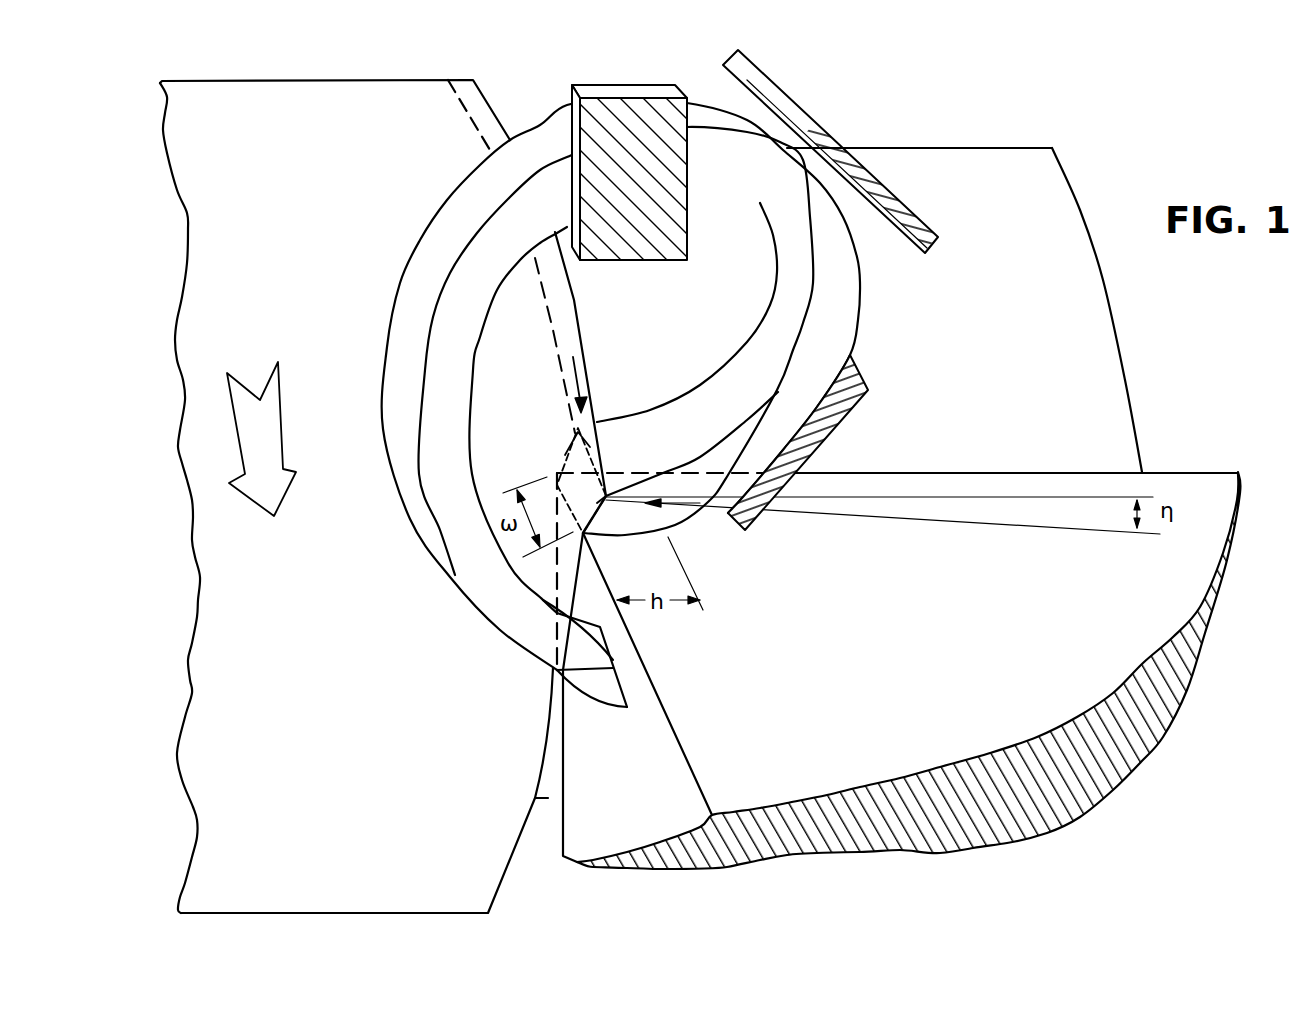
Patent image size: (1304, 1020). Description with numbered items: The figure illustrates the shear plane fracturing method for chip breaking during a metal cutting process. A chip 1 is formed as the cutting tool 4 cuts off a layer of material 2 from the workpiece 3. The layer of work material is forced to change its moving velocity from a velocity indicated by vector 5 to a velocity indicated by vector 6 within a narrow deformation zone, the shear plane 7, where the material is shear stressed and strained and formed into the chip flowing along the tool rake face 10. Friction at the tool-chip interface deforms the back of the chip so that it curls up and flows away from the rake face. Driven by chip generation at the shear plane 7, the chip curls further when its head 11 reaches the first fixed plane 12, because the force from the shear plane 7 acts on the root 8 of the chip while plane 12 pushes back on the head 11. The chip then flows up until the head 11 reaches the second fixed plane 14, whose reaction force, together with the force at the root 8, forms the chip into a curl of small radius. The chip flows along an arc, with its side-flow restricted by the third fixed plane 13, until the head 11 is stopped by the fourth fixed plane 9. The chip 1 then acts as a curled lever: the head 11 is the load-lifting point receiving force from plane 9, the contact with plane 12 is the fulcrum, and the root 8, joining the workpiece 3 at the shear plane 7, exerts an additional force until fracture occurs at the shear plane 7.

The chip 1 is at (743, 380).
The layer of material 2 is at (563, 327).
The workpiece 3 is at (368, 105).
The cutting tool 4 is at (992, 822).
The velocity vector 5 is at (577, 387).
The velocity vector 6 is at (660, 504).
The shear plane 7 is at (583, 533).
The root of the chip 8 is at (597, 503).
The fourth fixed plane 9 is at (640, 820).
The tool rake face 10 is at (1075, 687).
The head of the chip 11 is at (557, 670).
The first fixed plane 12 is at (728, 515).
The third fixed plane 13 is at (597, 83).
The second fixed plane 14 is at (863, 200).